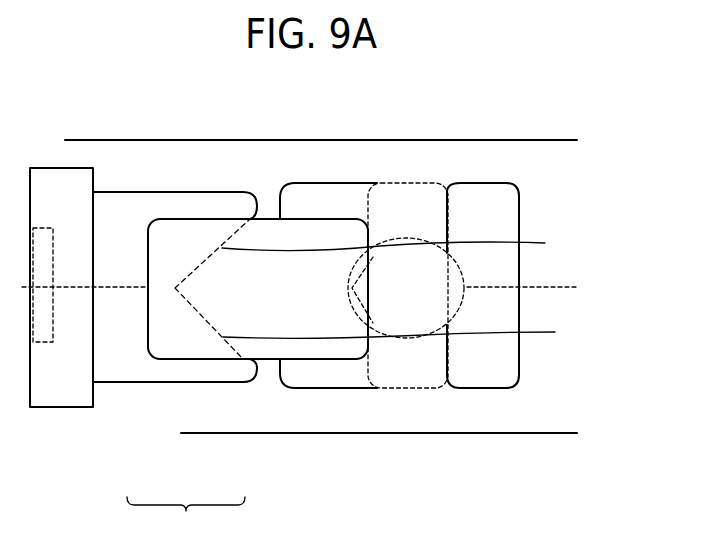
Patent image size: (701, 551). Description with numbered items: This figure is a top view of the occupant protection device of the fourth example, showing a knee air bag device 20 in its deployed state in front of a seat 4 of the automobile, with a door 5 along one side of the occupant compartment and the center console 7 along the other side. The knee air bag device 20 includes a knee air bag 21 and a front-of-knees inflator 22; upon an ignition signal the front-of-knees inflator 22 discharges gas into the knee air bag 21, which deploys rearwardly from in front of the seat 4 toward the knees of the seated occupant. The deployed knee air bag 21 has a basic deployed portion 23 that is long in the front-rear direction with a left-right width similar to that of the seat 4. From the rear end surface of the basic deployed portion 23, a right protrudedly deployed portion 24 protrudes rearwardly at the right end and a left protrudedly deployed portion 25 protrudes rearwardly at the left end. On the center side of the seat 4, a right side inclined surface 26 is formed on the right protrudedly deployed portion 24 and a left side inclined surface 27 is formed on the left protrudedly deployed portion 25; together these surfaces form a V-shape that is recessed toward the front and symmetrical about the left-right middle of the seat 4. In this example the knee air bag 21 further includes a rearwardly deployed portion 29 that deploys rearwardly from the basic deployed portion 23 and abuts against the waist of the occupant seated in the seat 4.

The seat 4 is at (483, 382).
The door 5 is at (553, 145).
The center console 7 is at (557, 428).
The knee air bag device 20 is at (284, 481).
The knee air bag 21 is at (186, 519).
The front-of-knees inflator 22 is at (43, 342).
The basic deployed portion 23 is at (133, 383).
The right protrudedly deployed portion 24 is at (233, 205).
The left protrudedly deployed portion 25 is at (228, 370).
The right side inclined surface 26 is at (396, 254).
The left side inclined surface 27 is at (405, 338).
The rearwardly deployed portion 29 is at (183, 342).